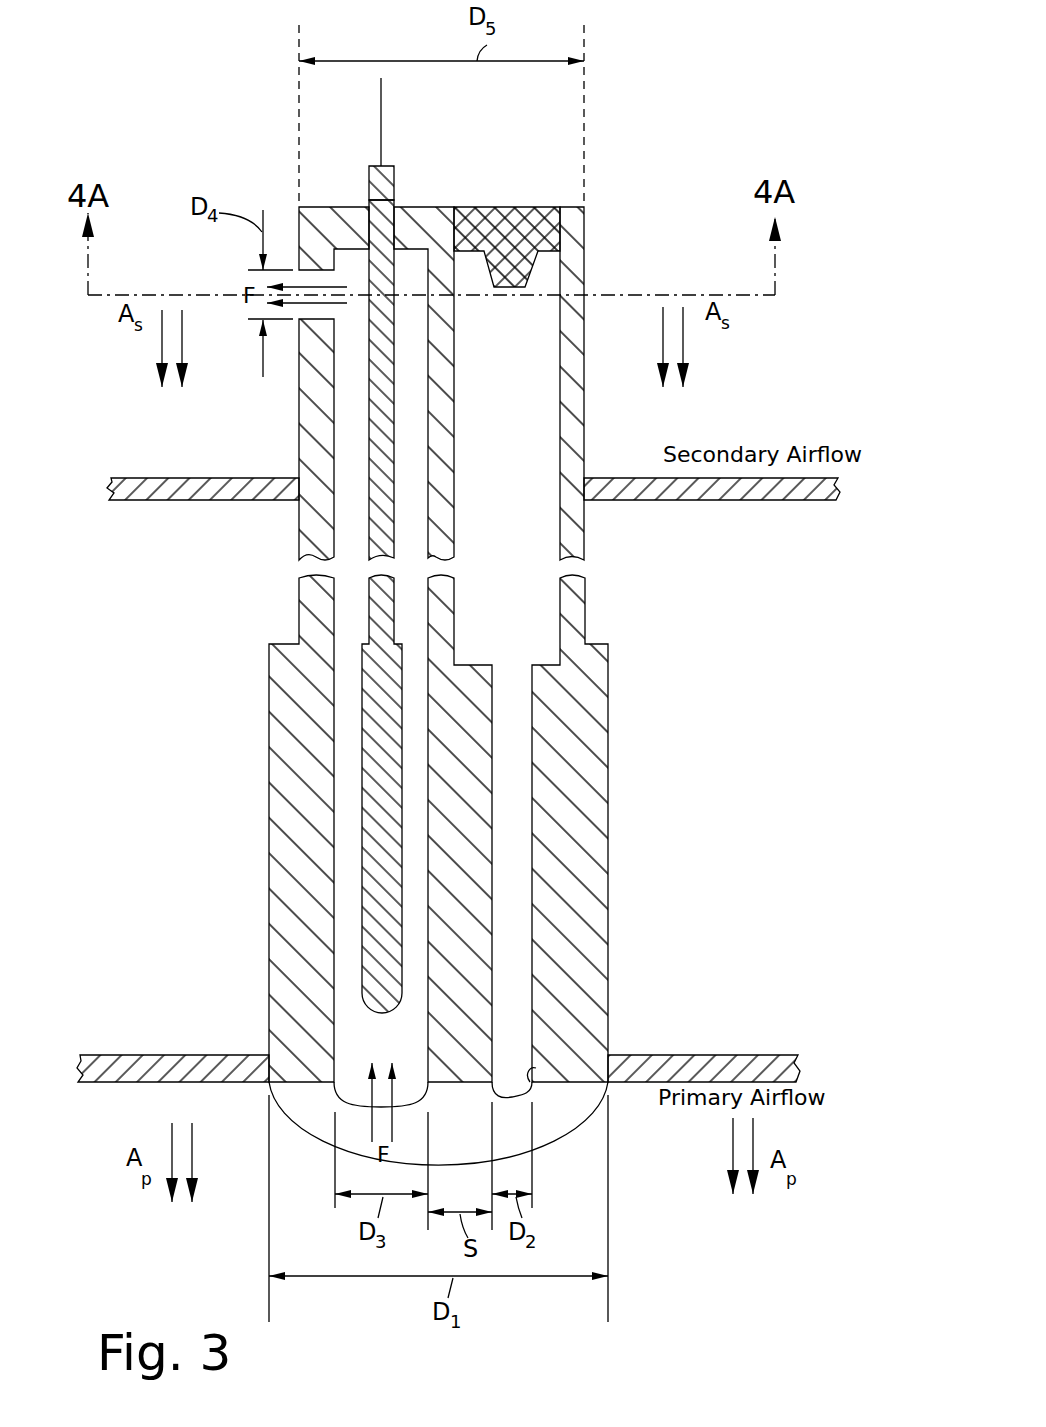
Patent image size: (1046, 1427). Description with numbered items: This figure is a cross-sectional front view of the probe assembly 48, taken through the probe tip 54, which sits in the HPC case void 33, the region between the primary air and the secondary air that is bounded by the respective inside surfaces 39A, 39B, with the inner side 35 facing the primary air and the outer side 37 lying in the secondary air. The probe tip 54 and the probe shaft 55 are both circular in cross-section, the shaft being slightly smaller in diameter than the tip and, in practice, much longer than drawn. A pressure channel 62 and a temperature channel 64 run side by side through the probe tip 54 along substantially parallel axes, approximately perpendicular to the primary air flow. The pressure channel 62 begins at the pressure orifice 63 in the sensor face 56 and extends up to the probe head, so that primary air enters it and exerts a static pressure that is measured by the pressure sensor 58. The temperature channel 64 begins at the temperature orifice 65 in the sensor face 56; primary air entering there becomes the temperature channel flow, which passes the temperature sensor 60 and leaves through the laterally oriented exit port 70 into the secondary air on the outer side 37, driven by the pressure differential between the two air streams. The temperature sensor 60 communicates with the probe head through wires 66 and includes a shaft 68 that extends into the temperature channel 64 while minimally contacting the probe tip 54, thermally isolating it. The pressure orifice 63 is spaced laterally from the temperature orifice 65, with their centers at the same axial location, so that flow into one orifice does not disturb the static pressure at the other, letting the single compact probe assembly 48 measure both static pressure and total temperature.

The probe assembly 48 is at (155, 168).
The wires 66 is at (380, 117).
The exit port 70 is at (312, 278).
The pressure sensor 58 is at (510, 230).
The probe shaft 55 is at (585, 279).
The shaft 68 is at (382, 381).
The temperature sensor 60 is at (377, 952).
The probe tip 54 is at (608, 722).
The inside surface 39B is at (190, 478).
The inside surface 39A is at (240, 1083).
The outer side 37 is at (745, 397).
The HPC case void 33 is at (746, 760).
The inner side 35 is at (677, 1194).
The temperature channel 64 is at (415, 1056).
The pressure channel 62 is at (525, 1056).
The sensor face 56 is at (473, 1157).
The pressure orifice 63 is at (537, 1082).
The temperature orifice 65 is at (333, 1085).